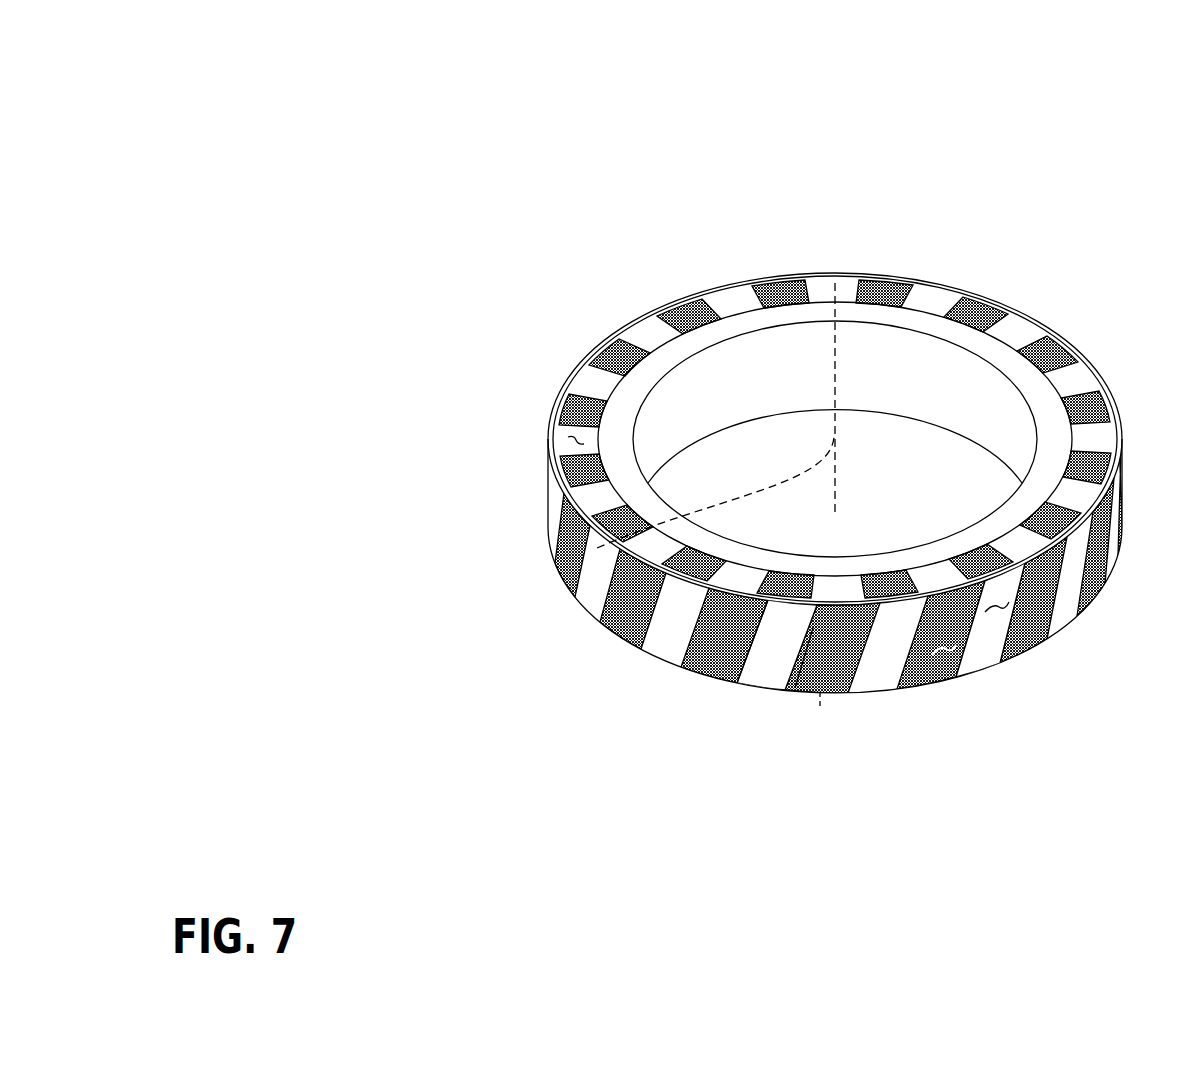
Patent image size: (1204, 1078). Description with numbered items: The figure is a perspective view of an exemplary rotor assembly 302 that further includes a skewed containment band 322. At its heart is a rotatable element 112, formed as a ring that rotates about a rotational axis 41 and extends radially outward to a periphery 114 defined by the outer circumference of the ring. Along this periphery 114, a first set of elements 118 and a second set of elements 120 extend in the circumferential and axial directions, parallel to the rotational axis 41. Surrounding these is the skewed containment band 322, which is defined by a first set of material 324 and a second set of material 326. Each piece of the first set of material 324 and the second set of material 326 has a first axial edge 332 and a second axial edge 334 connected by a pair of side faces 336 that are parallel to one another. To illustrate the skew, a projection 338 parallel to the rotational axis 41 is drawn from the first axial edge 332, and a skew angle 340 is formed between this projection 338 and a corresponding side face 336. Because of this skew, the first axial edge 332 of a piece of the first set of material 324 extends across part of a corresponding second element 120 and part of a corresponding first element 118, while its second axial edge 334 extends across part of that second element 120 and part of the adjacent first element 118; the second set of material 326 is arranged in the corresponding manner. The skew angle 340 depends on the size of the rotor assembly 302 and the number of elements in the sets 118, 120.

The rotor assembly 302 is at (295, 60).
The rotatable element 112 is at (653, 485).
The periphery 114 is at (633, 367).
The first set of elements 118 is at (550, 447).
The second set of elements 120 is at (587, 370).
The rotational axis 41 is at (548, 573).
The skewed containment band 322 is at (642, 660).
The first set of material 324 is at (963, 653).
The second set of material 326 is at (1008, 605).
The first axial edge 332 is at (902, 590).
The second axial edge 334 is at (757, 685).
The side faces 336 is at (727, 663).
The projection 338 is at (865, 693).
The skew angle 340 is at (813, 628).